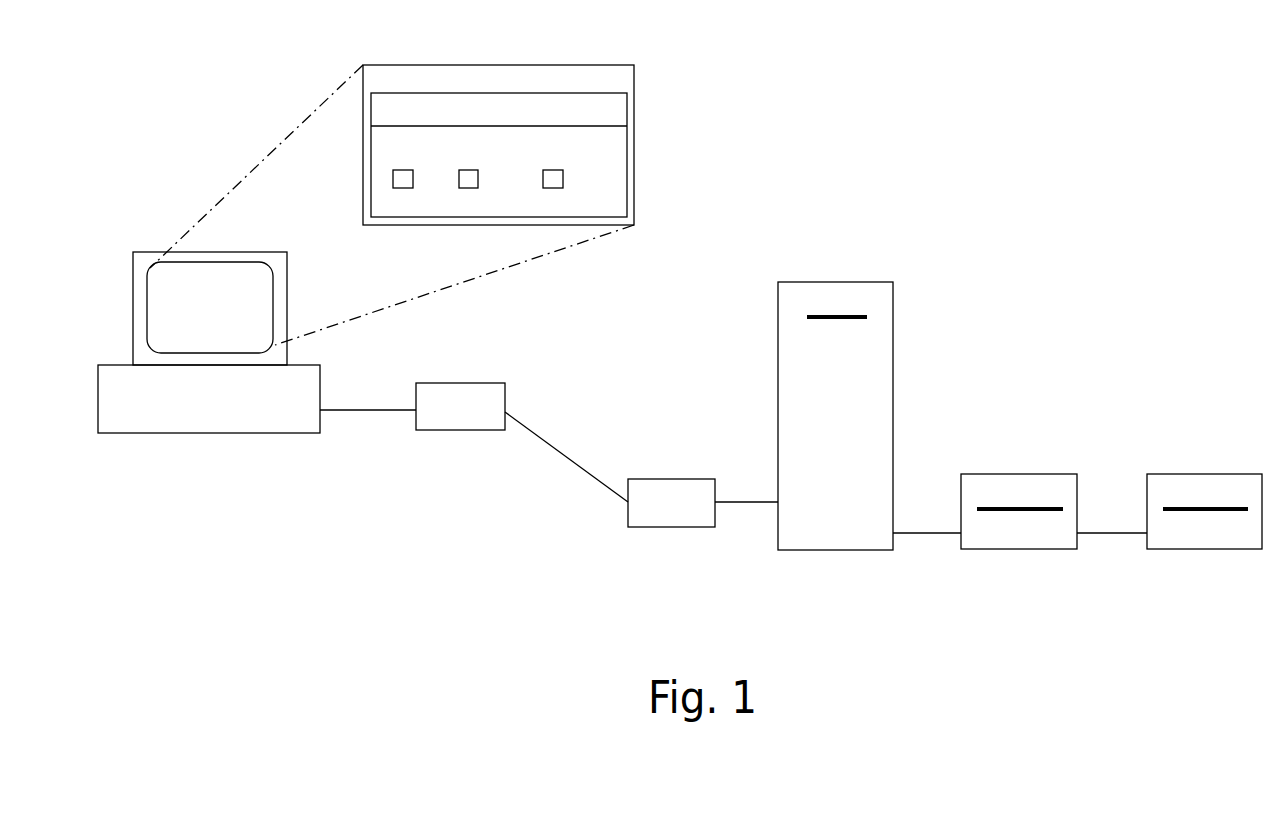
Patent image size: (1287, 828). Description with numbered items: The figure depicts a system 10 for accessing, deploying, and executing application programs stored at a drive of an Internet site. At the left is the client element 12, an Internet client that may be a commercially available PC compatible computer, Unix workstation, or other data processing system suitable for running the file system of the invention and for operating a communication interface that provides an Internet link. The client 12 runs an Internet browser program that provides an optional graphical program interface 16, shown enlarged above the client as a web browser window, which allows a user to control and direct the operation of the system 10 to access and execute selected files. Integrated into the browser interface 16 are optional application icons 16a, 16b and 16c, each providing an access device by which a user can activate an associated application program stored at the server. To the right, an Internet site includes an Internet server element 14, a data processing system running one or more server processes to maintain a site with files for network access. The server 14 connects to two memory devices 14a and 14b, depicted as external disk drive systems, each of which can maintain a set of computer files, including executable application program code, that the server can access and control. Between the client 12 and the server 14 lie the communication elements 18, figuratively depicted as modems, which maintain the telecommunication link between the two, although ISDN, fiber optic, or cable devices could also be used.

The system 10 is at (768, 70).
The client element 12 is at (150, 251).
The Internet server element 14 is at (850, 282).
The memory device 14a is at (1030, 474).
The memory device 14b is at (1197, 474).
The program interface 16 is at (634, 120).
The application icon 16a is at (392, 183).
The application icon 16b is at (478, 178).
The application icon 16c is at (563, 178).
The communication element 18 is at (442, 430).